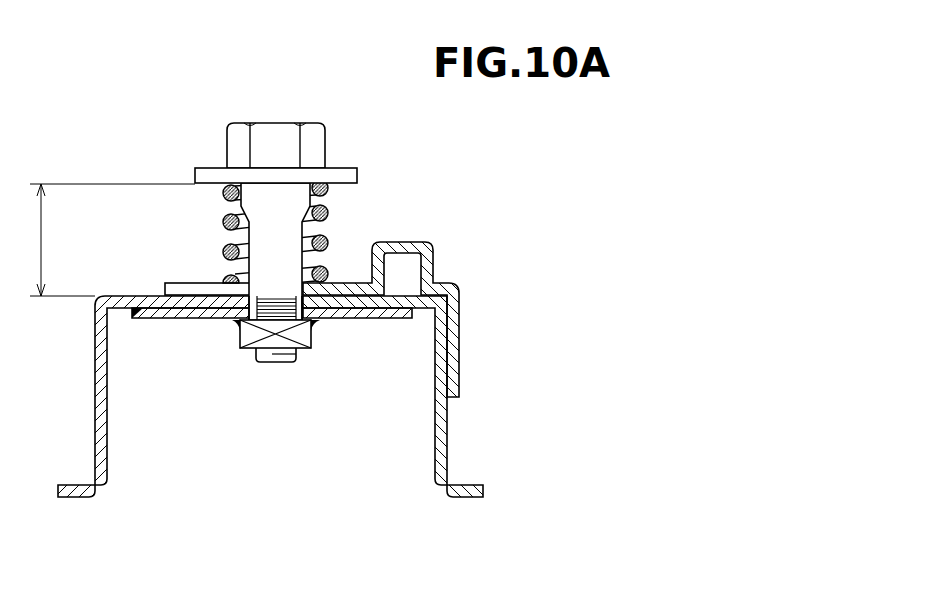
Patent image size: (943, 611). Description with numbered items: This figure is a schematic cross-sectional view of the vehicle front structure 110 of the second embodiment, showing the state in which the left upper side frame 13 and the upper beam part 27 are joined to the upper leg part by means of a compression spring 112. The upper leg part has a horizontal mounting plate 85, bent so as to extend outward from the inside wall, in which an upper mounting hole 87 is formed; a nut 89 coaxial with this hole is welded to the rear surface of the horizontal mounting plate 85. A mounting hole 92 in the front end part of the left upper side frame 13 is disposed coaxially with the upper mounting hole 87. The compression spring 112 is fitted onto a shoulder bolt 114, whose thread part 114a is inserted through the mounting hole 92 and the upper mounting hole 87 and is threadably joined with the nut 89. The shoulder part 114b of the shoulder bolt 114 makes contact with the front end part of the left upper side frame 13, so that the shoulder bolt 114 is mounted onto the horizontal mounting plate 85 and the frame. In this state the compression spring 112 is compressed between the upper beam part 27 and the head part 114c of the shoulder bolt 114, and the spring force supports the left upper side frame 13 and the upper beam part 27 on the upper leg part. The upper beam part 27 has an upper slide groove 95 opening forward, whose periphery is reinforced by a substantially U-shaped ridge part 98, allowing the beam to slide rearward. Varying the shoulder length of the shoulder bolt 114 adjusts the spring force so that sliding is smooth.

The left upper side frame 13 is at (448, 450).
The upper beam part 27 is at (461, 307).
The horizontal mounting plate 85 is at (168, 319).
The upper mounting hole 87 is at (283, 318).
The second upper nut 89 is at (310, 332).
The mounting hole 92 is at (293, 322).
The upper slide groove 95 is at (197, 285).
The ridge part 98 is at (399, 242).
The vehicle front structure 110 is at (465, 203).
The compression spring 112 is at (201, 170).
The shoulder bolt 114 is at (275, 124).
The thread part 114a is at (297, 358).
The shoulder part 114b is at (241, 322).
The head part 114c is at (313, 132).